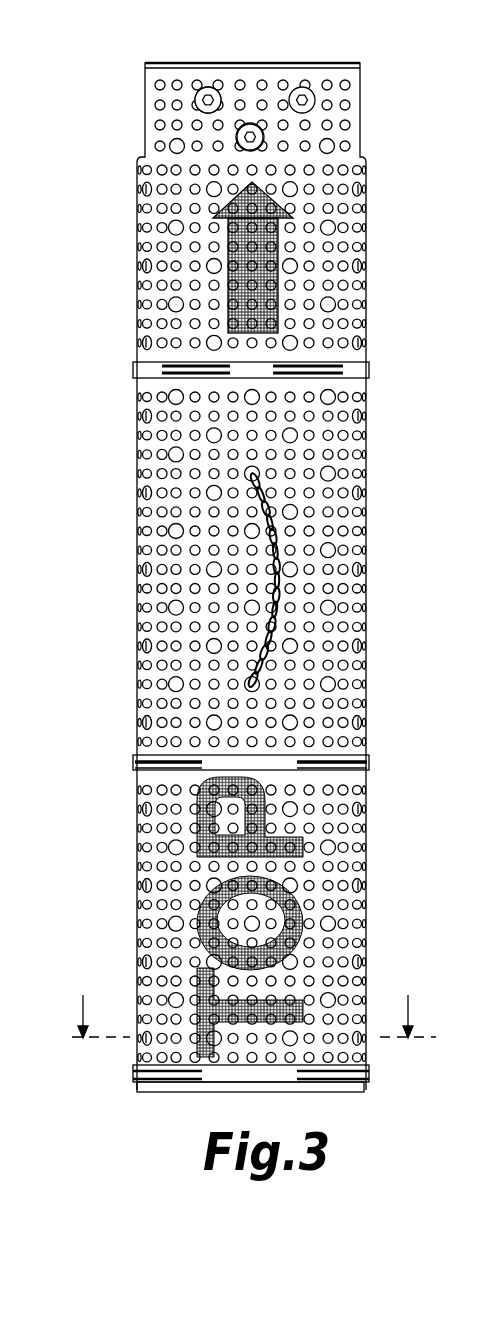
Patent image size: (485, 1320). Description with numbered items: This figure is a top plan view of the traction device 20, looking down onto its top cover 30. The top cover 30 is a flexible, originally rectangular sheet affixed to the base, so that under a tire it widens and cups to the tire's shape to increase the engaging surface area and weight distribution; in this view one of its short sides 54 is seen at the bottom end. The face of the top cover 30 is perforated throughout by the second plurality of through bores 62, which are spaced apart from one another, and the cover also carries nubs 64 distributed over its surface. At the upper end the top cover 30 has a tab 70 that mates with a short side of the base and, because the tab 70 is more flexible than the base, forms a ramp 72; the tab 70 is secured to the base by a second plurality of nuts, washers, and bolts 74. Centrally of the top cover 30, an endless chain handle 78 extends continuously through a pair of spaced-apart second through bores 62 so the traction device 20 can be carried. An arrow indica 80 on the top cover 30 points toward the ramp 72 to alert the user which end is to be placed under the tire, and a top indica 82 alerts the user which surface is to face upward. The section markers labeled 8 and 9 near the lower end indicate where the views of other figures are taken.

The traction device 20 is at (240, 575).
The top cover 30 is at (128, 427).
The short sides 54 is at (166, 1103).
The second plurality of through bores 62 is at (176, 683).
The nubs 64 is at (202, 548).
The tab 70 is at (170, 97).
The ramp 72 is at (208, 100).
The second plurality of nuts, washers, and bolts 74 is at (307, 85).
The endless chain handle 78 is at (291, 580).
The arrow indica 80 is at (222, 231).
The top indica 82 is at (192, 886).
The section line 8 is at (94, 989).
The section line 9 is at (408, 989).